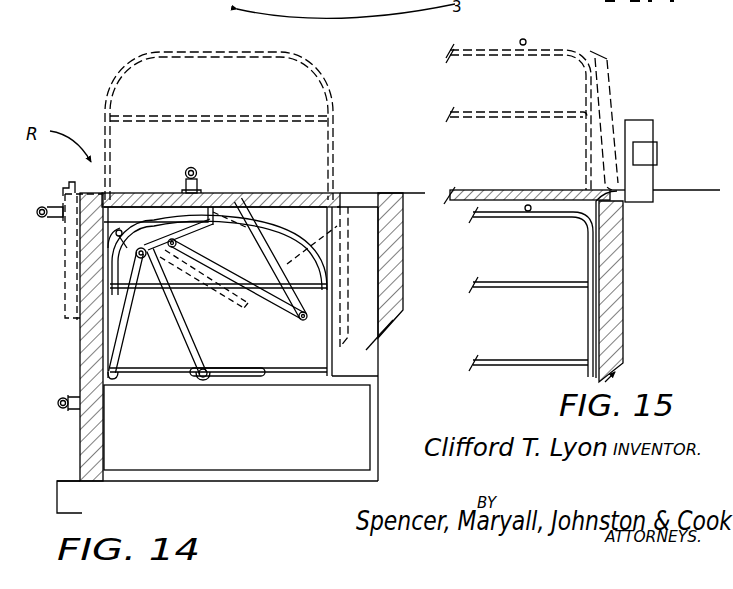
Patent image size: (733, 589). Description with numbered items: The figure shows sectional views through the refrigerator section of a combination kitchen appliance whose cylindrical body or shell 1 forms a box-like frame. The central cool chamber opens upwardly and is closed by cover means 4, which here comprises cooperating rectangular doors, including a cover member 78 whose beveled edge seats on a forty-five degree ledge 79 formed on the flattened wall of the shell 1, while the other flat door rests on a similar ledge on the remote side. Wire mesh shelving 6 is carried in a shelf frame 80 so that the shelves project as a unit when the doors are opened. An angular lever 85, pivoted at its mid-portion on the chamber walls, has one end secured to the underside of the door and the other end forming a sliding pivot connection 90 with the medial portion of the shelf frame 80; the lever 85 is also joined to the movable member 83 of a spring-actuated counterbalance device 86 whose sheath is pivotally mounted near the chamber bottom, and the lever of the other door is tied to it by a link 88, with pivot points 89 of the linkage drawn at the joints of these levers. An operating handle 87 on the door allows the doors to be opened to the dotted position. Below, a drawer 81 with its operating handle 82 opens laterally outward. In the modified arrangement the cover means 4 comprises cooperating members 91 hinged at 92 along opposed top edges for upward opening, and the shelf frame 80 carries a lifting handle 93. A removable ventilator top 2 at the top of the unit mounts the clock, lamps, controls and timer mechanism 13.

In FIG. 14, the body or shell 1 is at (80, 357).
In FIG. 15, the body or shell 1 is at (582, 284).
In FIG. 15, the ventilator top 2 is at (653, 131).
In FIG. 14, the cover means 4 is at (241, 190).
In FIG. 15, the cover means 4 is at (555, 186).
In FIG. 14, the shelving 6 is at (213, 116).
In FIG. 15, the shelving 6 is at (512, 362).
In FIG. 15, the timer mechanism 13 is at (657, 157).
In FIG. 14, the cover member 78 is at (160, 194).
In FIG. 14, the ledge 79 is at (92, 222).
In FIG. 14, the shelf frame 80 is at (128, 62).
In FIG. 15, the shelf frame 80 is at (470, 48).
In FIG. 14, the drawer 81 is at (355, 413).
In FIG. 14, the operating handle 82 is at (60, 405).
In FIG. 14, the movable member 83 is at (112, 231).
In FIG. 14, the angular lever 85 is at (260, 246).
In FIG. 14, the counterbalance device 86 is at (118, 346).
In FIG. 14, the operating handle 87 is at (199, 170).
In FIG. 14, the link 88 is at (241, 273).
In FIG. 14, the pivot 89 is at (178, 246).
In FIG. 14, the sliding pivot connection 90 is at (203, 370).
In FIG. 15, the cooperating member 91 is at (454, 194).
In FIG. 15, the hinge 92 is at (618, 196).
In FIG. 15, the lifting handle 93 is at (525, 39).